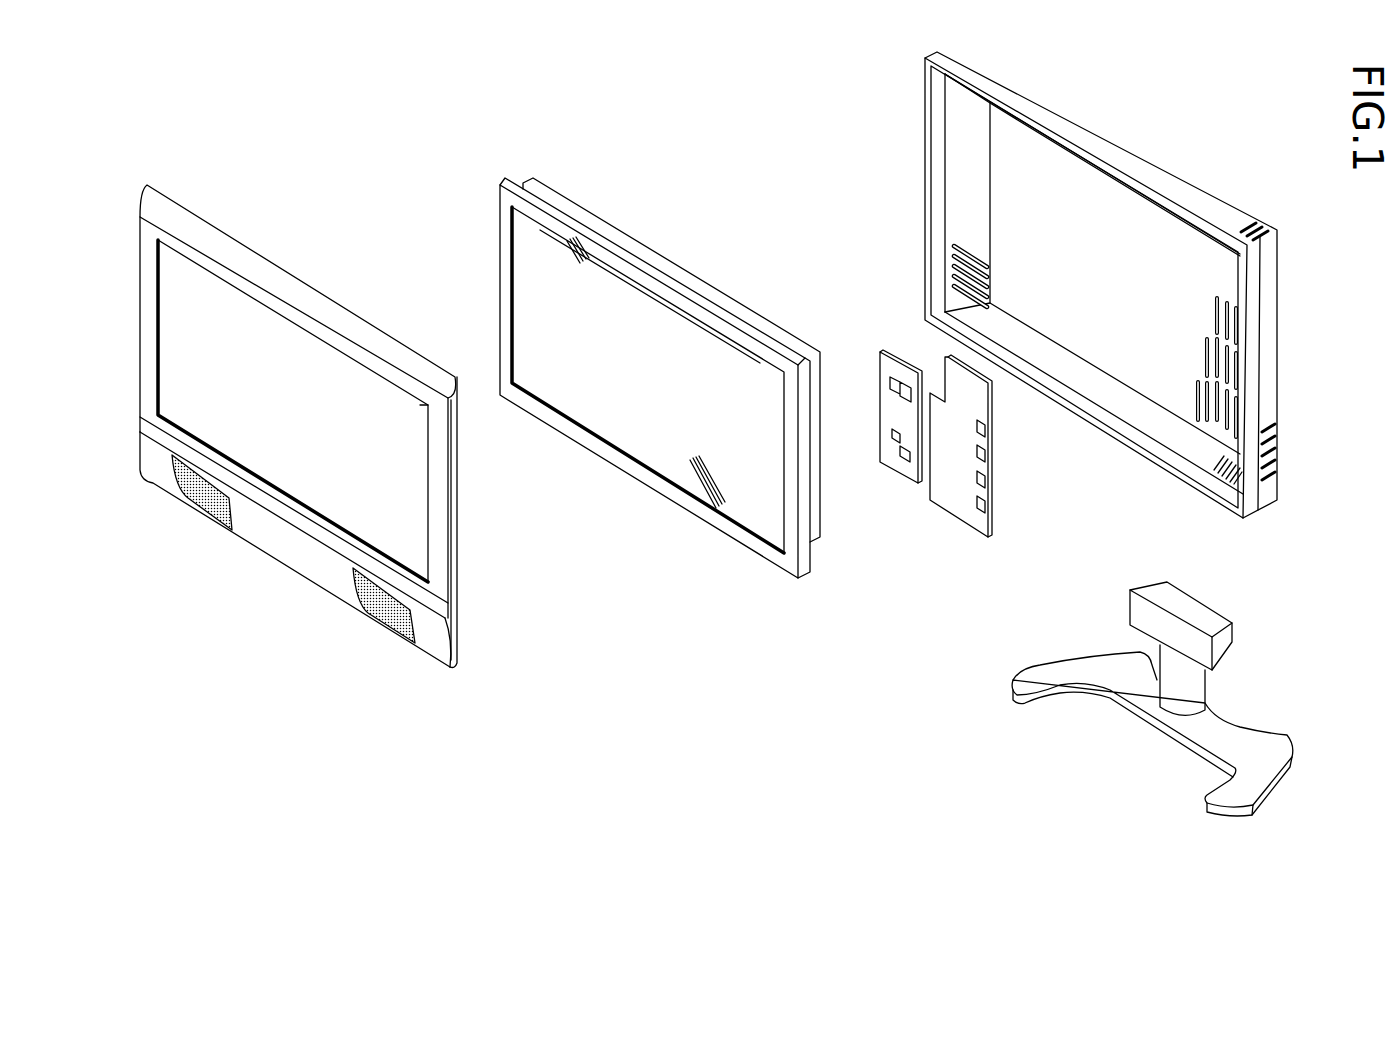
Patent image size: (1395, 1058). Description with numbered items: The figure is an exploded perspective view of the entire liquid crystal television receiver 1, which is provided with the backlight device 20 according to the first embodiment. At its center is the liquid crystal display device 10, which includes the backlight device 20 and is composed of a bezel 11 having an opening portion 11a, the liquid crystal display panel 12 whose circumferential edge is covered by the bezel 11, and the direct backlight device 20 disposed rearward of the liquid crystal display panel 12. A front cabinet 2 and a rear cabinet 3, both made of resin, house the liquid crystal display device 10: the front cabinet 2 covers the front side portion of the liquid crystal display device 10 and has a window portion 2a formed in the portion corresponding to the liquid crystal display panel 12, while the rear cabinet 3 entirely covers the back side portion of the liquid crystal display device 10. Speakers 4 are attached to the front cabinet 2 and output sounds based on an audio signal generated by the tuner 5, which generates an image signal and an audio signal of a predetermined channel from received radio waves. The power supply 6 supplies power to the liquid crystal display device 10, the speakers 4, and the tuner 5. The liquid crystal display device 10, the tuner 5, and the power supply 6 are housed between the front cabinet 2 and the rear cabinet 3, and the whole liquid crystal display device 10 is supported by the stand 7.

The liquid crystal television receiver 1 is at (241, 92).
The front cabinet 2 is at (280, 285).
The window portion 2a is at (432, 483).
The rear cabinet 3 is at (1113, 143).
The speakers 4 is at (188, 498).
The tuner 5 is at (893, 460).
The power supply 6 is at (950, 503).
The stand 7 is at (1130, 690).
The liquid crystal display device 10 is at (660, 378).
The bezel 11 is at (710, 515).
The opening portion 11a is at (621, 447).
The liquid crystal display panel 12 is at (593, 418).
The backlight device 20 is at (728, 300).